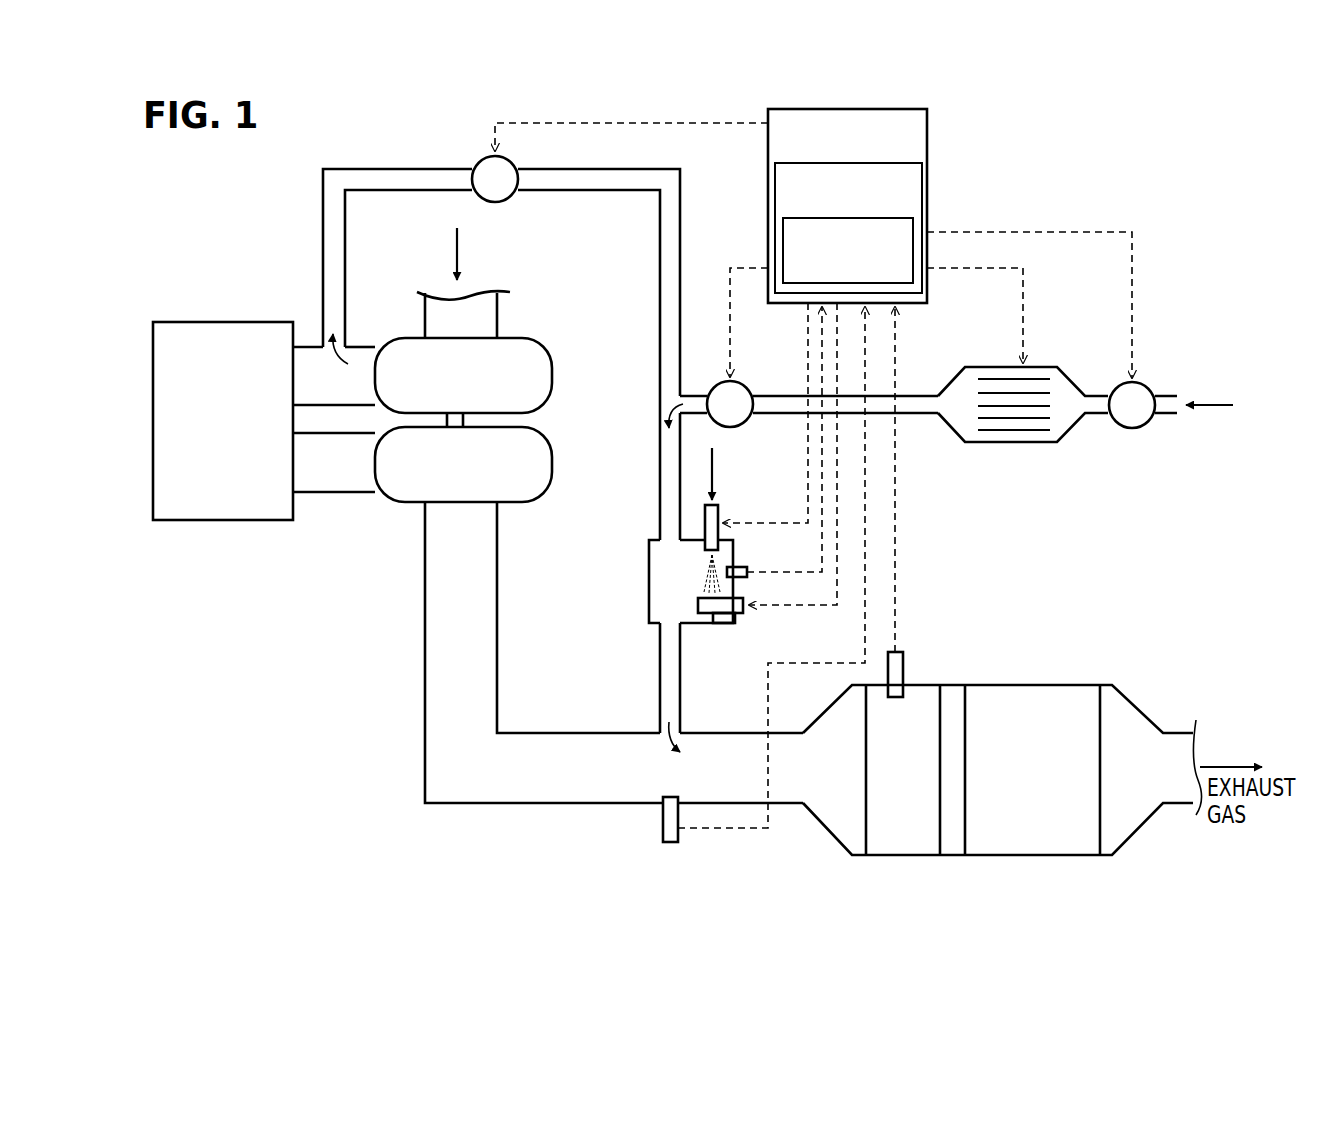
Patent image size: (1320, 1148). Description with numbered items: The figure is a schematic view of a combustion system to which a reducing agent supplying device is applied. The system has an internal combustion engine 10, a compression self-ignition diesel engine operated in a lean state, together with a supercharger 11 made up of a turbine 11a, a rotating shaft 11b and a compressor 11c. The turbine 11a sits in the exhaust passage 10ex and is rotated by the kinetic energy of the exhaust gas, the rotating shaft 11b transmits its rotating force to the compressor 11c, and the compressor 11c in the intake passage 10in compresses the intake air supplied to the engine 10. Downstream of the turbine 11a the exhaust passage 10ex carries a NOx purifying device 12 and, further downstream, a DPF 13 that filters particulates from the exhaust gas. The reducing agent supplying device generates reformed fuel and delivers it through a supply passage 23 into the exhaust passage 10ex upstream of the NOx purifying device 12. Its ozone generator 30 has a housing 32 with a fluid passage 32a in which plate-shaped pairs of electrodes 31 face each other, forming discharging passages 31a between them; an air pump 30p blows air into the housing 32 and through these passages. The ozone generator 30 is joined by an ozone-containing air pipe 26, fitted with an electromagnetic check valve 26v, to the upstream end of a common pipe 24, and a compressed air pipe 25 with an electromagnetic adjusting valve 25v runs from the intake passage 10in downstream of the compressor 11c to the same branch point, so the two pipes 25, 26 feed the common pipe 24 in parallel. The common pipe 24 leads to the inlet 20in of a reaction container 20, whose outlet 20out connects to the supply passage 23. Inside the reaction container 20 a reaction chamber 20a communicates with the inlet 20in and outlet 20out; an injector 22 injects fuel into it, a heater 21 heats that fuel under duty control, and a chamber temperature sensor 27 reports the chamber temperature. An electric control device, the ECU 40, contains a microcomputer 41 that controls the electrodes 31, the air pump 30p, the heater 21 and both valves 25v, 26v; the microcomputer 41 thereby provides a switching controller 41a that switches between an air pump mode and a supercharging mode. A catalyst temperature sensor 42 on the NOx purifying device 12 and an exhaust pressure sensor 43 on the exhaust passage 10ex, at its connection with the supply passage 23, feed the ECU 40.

The internal combustion engine 10 is at (218, 520).
The intake passage 10in is at (312, 347).
The exhaust passage 10ex is at (536, 803).
The supercharger 11 is at (484, 394).
The turbine 11a is at (398, 504).
The rotating shaft 11b is at (470, 419).
The compressor 11c is at (552, 376).
The NOx purifying device 12 is at (900, 844).
The diesel particulate filter 13 is at (1022, 844).
The reaction container 20 is at (673, 558).
The reaction chamber 20a is at (666, 570).
The inlet 20in is at (664, 546).
The outlet 20out is at (664, 614).
The heater 21 is at (716, 623).
The injector 22 is at (720, 511).
The supply passage 23 is at (660, 688).
The common pipe 24 is at (660, 458).
The compressed air pipe 25 is at (659, 240).
The adjusting valve 25v is at (478, 160).
The ozone-containing air pipe 26 is at (778, 395).
The check valve 26v is at (714, 385).
The chamber temperature sensor 27 is at (736, 566).
The ozone generator 30 is at (1019, 394).
The air pump 30p is at (1132, 428).
The electrodes 31 is at (1013, 434).
The discharging passages 31a is at (979, 412).
The housing 32 is at (1072, 380).
The fluid passage 32a is at (1064, 408).
The electric control device 40 is at (881, 206).
The microcomputer 41 is at (888, 163).
The switching controller 41a is at (890, 218).
The catalyst temperature sensor 42 is at (903, 665).
The exhaust pressure sensor 43 is at (663, 828).